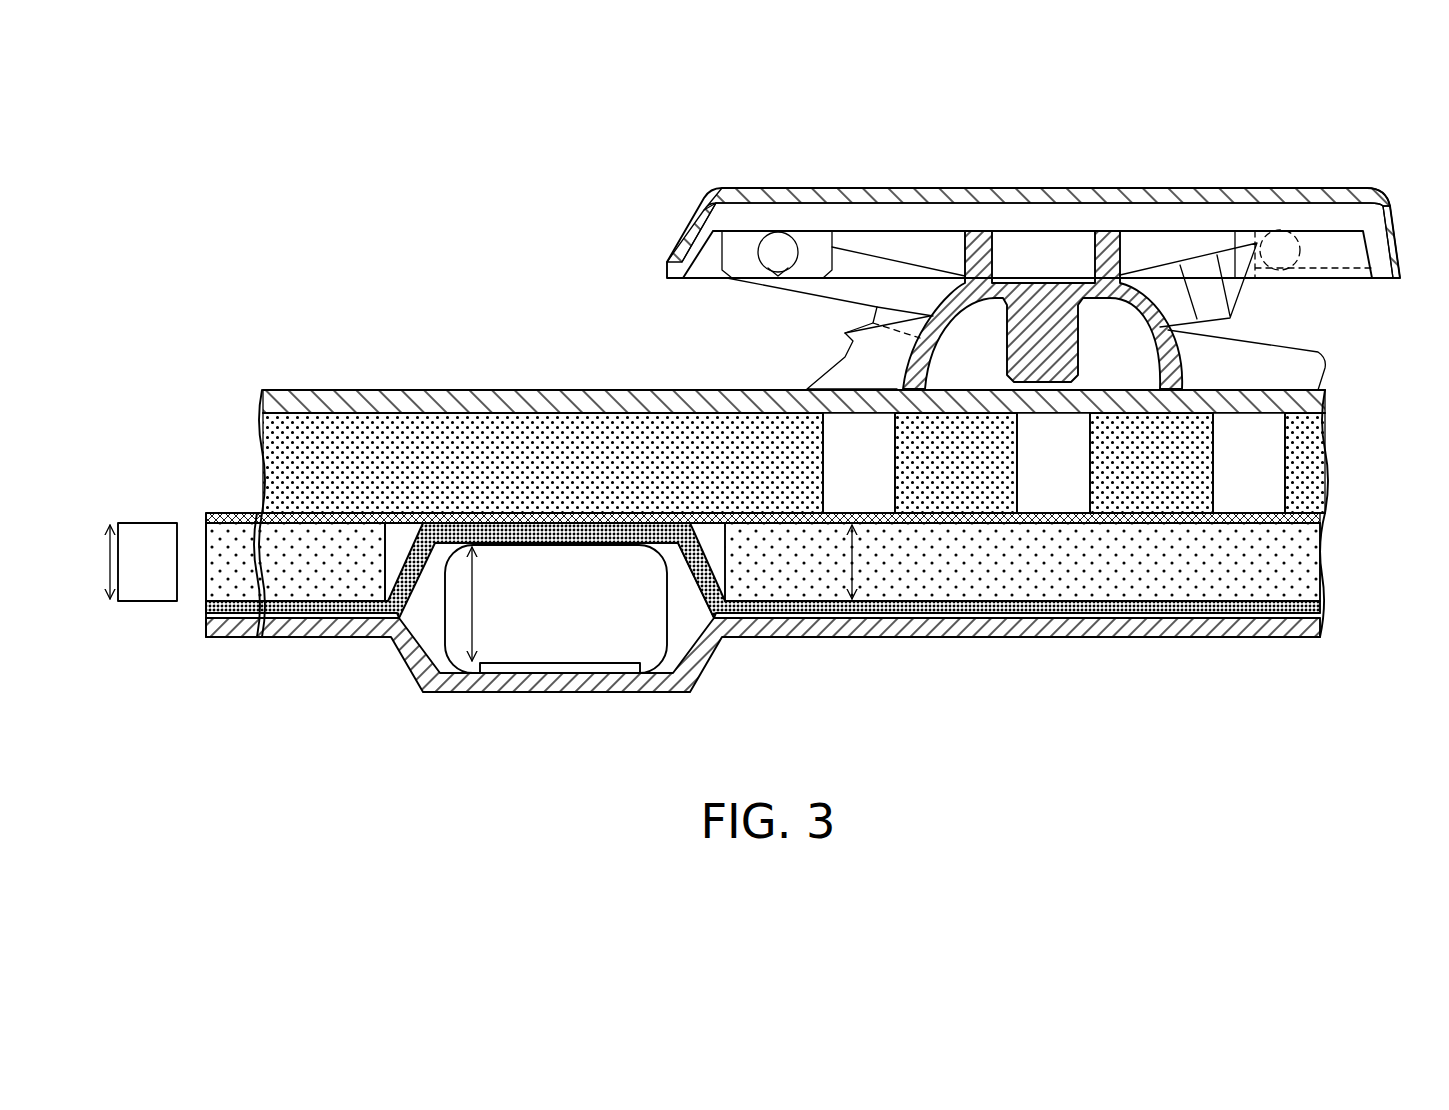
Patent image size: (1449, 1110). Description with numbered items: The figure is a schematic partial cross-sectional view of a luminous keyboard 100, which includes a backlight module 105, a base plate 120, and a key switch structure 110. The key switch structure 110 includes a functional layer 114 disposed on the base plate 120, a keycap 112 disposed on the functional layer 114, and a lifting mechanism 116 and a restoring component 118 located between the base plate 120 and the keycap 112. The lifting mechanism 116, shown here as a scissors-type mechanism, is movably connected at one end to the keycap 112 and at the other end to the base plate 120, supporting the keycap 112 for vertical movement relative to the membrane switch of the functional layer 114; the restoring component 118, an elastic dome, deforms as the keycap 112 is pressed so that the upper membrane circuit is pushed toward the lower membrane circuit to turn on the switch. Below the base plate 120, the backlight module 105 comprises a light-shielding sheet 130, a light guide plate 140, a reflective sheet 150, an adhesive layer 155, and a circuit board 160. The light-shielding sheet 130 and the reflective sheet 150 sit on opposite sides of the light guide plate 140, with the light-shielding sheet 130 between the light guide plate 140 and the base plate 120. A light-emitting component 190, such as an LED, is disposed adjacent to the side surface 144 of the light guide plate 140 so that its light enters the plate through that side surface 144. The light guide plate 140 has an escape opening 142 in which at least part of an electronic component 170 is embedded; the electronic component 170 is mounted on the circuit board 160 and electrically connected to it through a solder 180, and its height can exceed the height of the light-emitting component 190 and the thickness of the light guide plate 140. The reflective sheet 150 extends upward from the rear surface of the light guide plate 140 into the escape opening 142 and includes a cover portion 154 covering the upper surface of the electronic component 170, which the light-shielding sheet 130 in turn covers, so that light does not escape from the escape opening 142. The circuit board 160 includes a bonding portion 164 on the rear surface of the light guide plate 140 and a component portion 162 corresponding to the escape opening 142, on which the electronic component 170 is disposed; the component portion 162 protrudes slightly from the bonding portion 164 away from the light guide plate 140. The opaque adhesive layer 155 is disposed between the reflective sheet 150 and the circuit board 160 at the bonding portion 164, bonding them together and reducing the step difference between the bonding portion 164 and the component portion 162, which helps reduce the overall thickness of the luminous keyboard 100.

The luminous keyboard 100 is at (1378, 742).
The backlight module 105 is at (1393, 507).
The key switch structure 110 is at (1370, 155).
The keycap 112 is at (1063, 225).
The functional layer 114 is at (384, 390).
The lifting mechanism 116 is at (852, 292).
The restoring component 118 is at (975, 236).
The base plate 120 is at (1322, 480).
The light-shielding sheet 130 is at (1322, 517).
The light guide plate 140 is at (1320, 558).
The escape opening 142 is at (393, 550).
The side surface 144 is at (203, 558).
The reflective sheet 150 is at (1322, 607).
The cover portion 154 is at (668, 546).
The adhesive layer 155 is at (1322, 616).
The circuit board 160 is at (1322, 630).
The component portion 162 is at (672, 692).
The bonding portion 164 is at (1213, 637).
The electronic component 170 is at (449, 685).
The solder 180 is at (557, 678).
The light-emitting component 190 is at (142, 525).